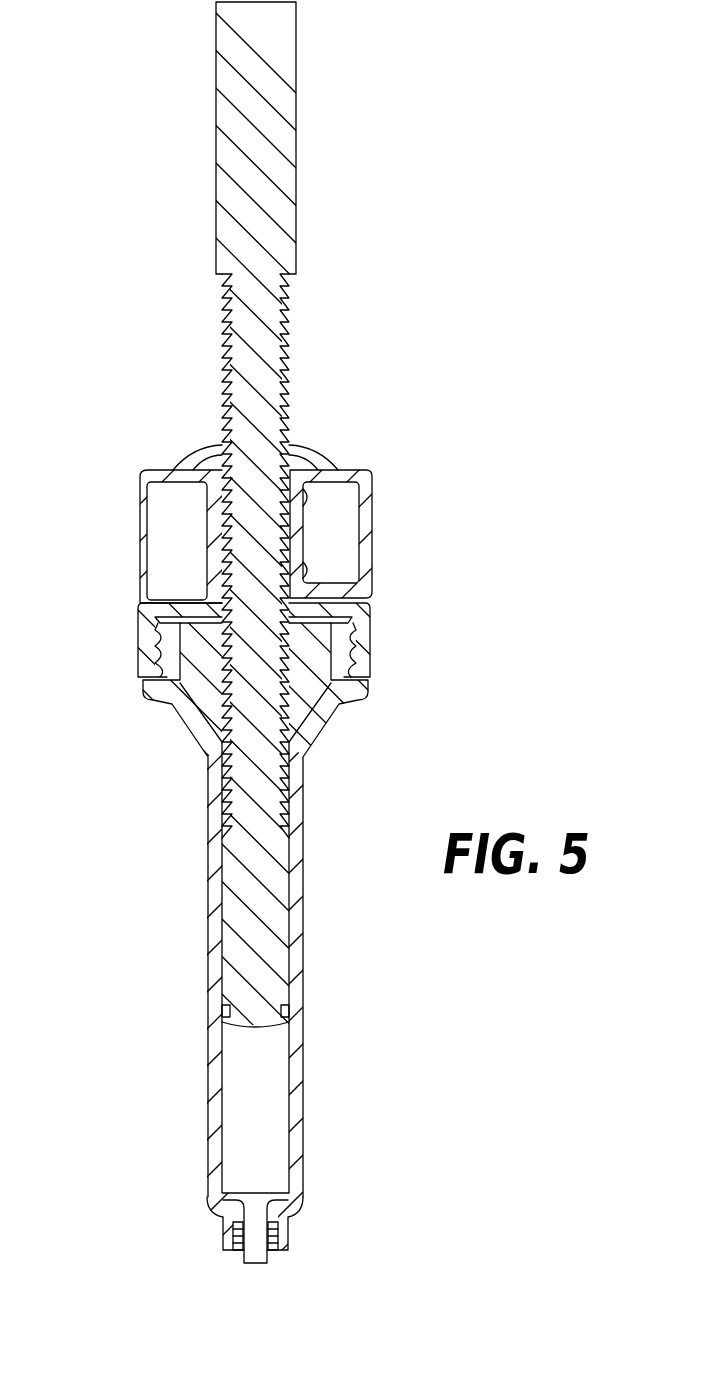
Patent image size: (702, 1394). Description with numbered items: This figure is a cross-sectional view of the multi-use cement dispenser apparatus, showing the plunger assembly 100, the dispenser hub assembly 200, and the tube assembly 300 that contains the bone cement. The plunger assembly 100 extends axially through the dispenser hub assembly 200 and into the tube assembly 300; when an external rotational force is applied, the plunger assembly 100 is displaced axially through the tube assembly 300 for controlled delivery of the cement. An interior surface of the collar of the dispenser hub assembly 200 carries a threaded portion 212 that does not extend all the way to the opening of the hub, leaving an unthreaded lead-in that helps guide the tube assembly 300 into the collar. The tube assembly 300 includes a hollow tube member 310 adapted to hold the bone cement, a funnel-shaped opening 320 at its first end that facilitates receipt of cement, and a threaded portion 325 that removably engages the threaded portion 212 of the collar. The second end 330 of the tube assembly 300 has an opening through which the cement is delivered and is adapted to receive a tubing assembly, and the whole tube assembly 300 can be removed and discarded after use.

The plunger assembly 100 is at (312, 238).
The dispenser hub assembly 200 is at (382, 495).
The threaded portion 212 is at (356, 622).
The tube assembly 300 is at (249, 697).
The hollow tube member 310 is at (117, 1188).
The funnel-shaped opening 320 is at (253, 600).
The threaded portion 325 is at (347, 655).
The second end 330 is at (195, 1193).